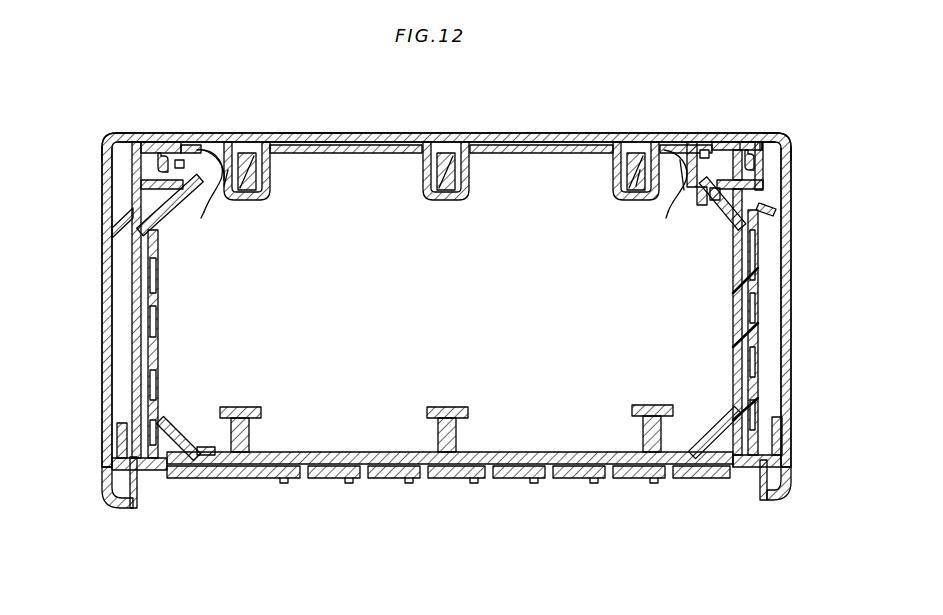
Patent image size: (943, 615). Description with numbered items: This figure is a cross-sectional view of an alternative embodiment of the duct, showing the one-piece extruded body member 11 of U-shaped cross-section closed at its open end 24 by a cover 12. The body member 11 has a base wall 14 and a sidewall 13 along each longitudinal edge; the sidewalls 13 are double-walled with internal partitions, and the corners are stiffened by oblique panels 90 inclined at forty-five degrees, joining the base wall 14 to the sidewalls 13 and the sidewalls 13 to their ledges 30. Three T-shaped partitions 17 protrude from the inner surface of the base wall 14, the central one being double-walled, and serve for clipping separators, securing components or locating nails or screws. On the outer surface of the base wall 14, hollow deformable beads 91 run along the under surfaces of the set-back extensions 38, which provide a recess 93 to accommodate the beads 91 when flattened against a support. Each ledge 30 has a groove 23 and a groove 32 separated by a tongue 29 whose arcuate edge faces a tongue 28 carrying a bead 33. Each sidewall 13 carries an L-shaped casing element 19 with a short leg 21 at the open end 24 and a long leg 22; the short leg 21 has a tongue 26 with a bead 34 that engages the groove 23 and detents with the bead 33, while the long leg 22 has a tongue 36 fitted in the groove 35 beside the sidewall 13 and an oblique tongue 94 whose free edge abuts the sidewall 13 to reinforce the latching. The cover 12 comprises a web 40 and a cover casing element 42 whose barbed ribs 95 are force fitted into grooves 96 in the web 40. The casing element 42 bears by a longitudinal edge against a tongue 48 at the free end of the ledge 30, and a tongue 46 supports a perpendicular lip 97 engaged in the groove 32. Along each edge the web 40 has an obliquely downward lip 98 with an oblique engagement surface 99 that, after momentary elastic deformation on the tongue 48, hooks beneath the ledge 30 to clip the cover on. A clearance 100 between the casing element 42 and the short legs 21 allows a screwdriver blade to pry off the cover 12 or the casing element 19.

The body member 11 is at (290, 503).
The cover 12 is at (358, 131).
The sidewall 13 is at (768, 270).
The base wall 14 is at (533, 449).
The partition 17 is at (240, 404).
The casing element 19 is at (99, 272).
The short leg 21 is at (138, 134).
The long leg 22 is at (791, 360).
The groove 23 is at (747, 134).
The open end 24 is at (454, 266).
The tongue 26 is at (722, 216).
The tongue 28 is at (764, 164).
The tongue 29 is at (163, 146).
The ledge 30 is at (158, 206).
The groove 32 is at (702, 206).
The bead 33 is at (768, 134).
The bead 34 is at (773, 146).
The groove 35 is at (112, 447).
The tongue 36 is at (755, 447).
The extension 38 is at (107, 487).
The web 40 is at (358, 156).
The casing element 42 is at (299, 133).
The tongue 46 is at (688, 152).
The tongue 48 is at (224, 188).
The oblique panel 90 is at (190, 446).
The deformable bead 91 is at (121, 509).
The recess 93 is at (170, 430).
The oblique tongue 94 is at (777, 208).
The rib 95 is at (271, 176).
The groove 96 is at (254, 196).
The lip 97 is at (684, 192).
The lip 98 is at (214, 165).
The oblique engagement surface 99 is at (203, 214).
The clearance 100 is at (186, 134).